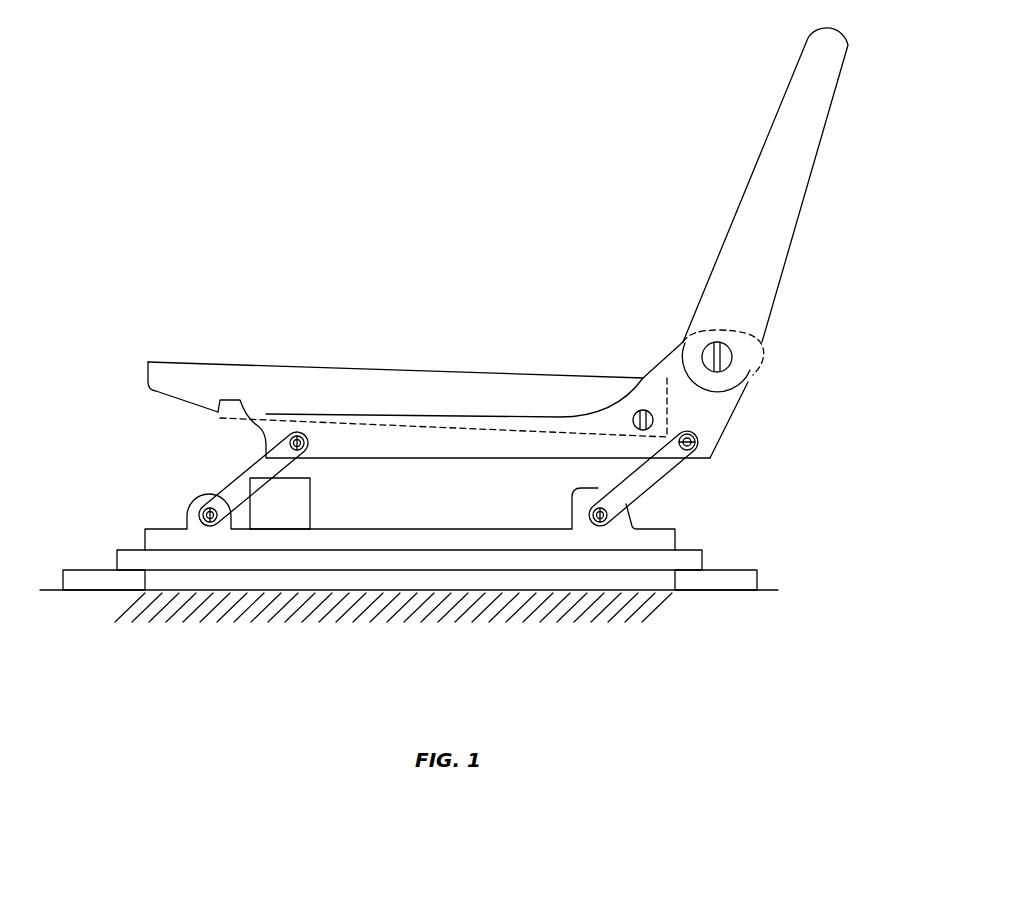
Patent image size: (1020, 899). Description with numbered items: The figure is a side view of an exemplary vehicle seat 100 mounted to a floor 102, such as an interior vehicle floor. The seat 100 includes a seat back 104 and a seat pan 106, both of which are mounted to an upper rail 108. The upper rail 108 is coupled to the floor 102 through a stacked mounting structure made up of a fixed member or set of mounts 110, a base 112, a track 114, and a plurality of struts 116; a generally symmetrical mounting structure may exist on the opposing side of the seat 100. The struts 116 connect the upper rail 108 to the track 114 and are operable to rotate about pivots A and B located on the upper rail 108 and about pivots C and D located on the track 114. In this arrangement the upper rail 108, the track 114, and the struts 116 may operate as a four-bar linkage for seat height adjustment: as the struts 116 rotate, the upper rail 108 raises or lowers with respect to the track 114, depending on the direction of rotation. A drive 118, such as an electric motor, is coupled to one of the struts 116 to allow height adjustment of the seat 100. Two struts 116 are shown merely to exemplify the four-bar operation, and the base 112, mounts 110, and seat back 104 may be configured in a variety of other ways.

The vehicle seat 100 is at (427, 155).
The floor 102 is at (600, 612).
The seat back 104 is at (755, 167).
The seat pan 106 is at (515, 372).
The upper rail 108 is at (745, 405).
The mounts 110 is at (92, 570).
The base 112 is at (688, 548).
The track 114 is at (173, 529).
The struts 116 is at (245, 468).
The drive 118 is at (298, 512).
The pivot A is at (725, 418).
The pivot B is at (297, 433).
The pivot C is at (205, 507).
The pivot D is at (590, 512).